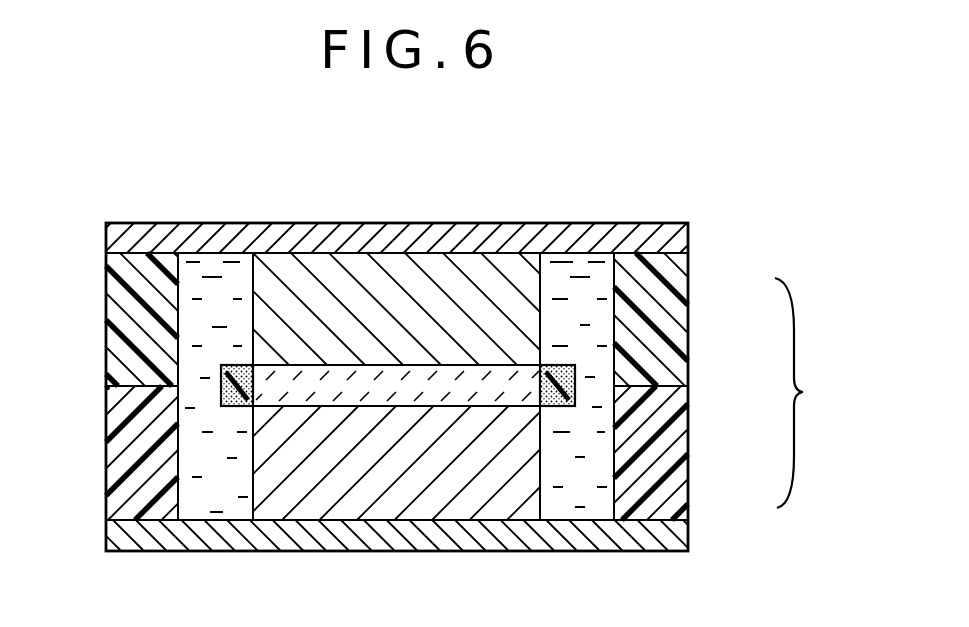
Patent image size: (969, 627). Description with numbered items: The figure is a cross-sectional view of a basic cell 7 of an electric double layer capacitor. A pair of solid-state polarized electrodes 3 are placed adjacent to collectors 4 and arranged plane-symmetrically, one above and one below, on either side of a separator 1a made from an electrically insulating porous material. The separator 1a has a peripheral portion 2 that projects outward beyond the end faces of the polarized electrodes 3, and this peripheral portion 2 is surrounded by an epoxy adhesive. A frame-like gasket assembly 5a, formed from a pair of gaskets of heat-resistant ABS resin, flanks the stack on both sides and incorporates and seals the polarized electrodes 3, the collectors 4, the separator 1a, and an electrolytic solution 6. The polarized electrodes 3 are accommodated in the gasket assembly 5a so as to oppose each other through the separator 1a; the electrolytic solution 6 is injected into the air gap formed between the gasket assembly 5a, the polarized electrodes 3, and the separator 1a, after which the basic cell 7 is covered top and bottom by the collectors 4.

The separator 1a is at (447, 377).
The peripheral portion 2 is at (221, 376).
The polarized electrodes 3 is at (366, 270).
The collectors 4 is at (632, 232).
The gasket assembly 5a is at (122, 467).
The electrolytic solution 6 is at (210, 262).
The basic cell 7 is at (808, 393).